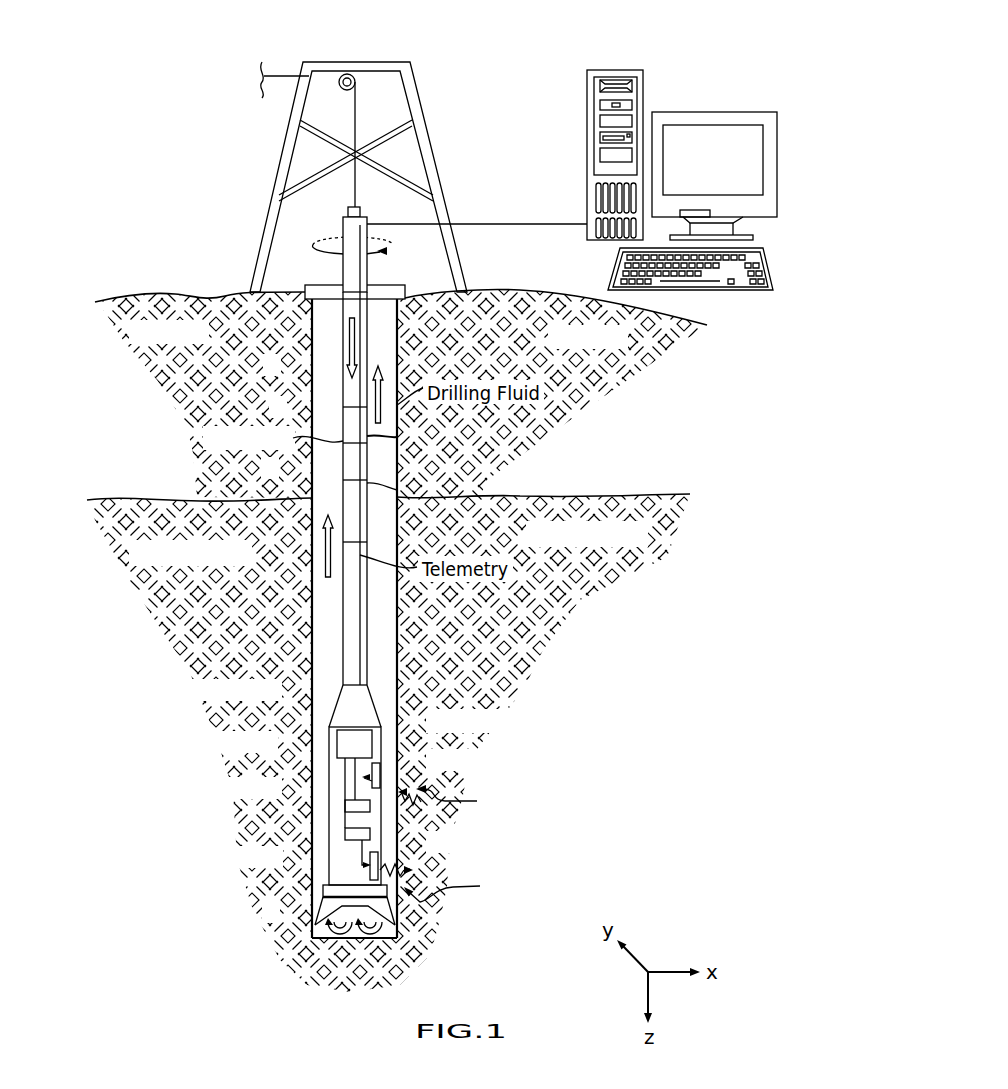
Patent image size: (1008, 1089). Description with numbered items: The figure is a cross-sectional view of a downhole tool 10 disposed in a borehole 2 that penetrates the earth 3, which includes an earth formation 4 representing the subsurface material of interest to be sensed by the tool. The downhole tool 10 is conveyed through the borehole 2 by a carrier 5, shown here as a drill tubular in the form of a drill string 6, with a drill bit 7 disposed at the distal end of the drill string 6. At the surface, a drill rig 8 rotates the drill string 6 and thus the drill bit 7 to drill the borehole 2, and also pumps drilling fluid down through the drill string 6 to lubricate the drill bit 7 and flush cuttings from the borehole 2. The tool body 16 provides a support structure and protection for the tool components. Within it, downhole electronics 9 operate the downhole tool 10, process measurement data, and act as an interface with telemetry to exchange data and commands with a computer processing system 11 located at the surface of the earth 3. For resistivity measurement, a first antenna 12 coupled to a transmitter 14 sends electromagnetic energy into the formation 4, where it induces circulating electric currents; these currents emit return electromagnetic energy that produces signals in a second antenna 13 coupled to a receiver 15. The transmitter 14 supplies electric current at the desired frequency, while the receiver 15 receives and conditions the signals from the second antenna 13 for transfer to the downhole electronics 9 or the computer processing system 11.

The borehole 2 is at (321, 412).
The earth 3 is at (624, 347).
The earth formation 4 is at (644, 545).
The carrier 5 is at (343, 493).
The drill string 6 is at (342, 386).
The drill bit 7 is at (318, 900).
The drill rig 8 is at (233, 221).
The downhole electronics 9 is at (343, 753).
The downhole tool 10 is at (407, 806).
The computer processing system 11 is at (618, 70).
The first antenna 12 is at (378, 863).
The second antenna 13 is at (380, 781).
The transmitter 14 is at (343, 833).
The receiver 15 is at (343, 805).
The tool body 16 is at (381, 742).